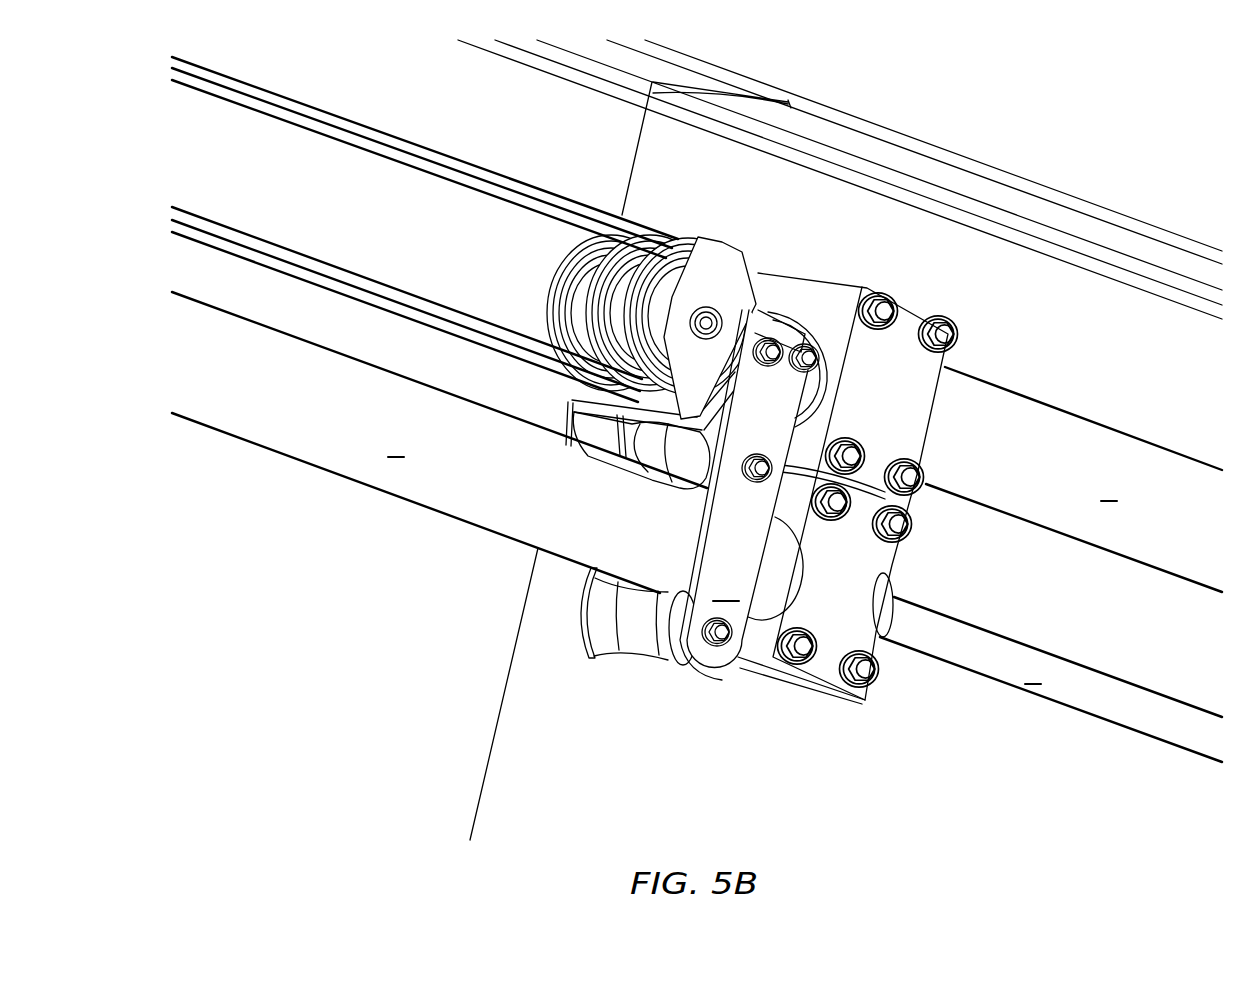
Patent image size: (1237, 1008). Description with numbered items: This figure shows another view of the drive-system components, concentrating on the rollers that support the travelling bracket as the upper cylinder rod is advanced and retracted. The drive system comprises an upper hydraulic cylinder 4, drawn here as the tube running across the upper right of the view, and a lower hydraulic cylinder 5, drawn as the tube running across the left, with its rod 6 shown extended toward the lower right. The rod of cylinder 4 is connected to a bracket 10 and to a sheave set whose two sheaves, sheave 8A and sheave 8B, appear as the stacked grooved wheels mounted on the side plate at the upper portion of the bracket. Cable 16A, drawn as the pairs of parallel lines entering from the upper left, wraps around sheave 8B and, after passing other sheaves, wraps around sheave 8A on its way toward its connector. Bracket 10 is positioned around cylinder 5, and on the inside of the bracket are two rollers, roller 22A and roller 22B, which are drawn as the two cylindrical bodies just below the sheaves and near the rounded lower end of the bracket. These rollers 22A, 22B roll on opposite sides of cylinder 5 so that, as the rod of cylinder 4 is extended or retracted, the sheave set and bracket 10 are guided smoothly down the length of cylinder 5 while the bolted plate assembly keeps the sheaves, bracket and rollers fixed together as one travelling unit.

The hydraulic cylinder 4 is at (1074, 479).
The hydraulic cylinder 5 is at (416, 503).
The rod 6 is at (1051, 679).
The sheave 8A is at (694, 238).
The sheave 8B is at (555, 268).
The bracket 10 is at (772, 505).
The cable 16A is at (474, 167).
The roller 22A is at (680, 453).
The roller 22B is at (651, 607).